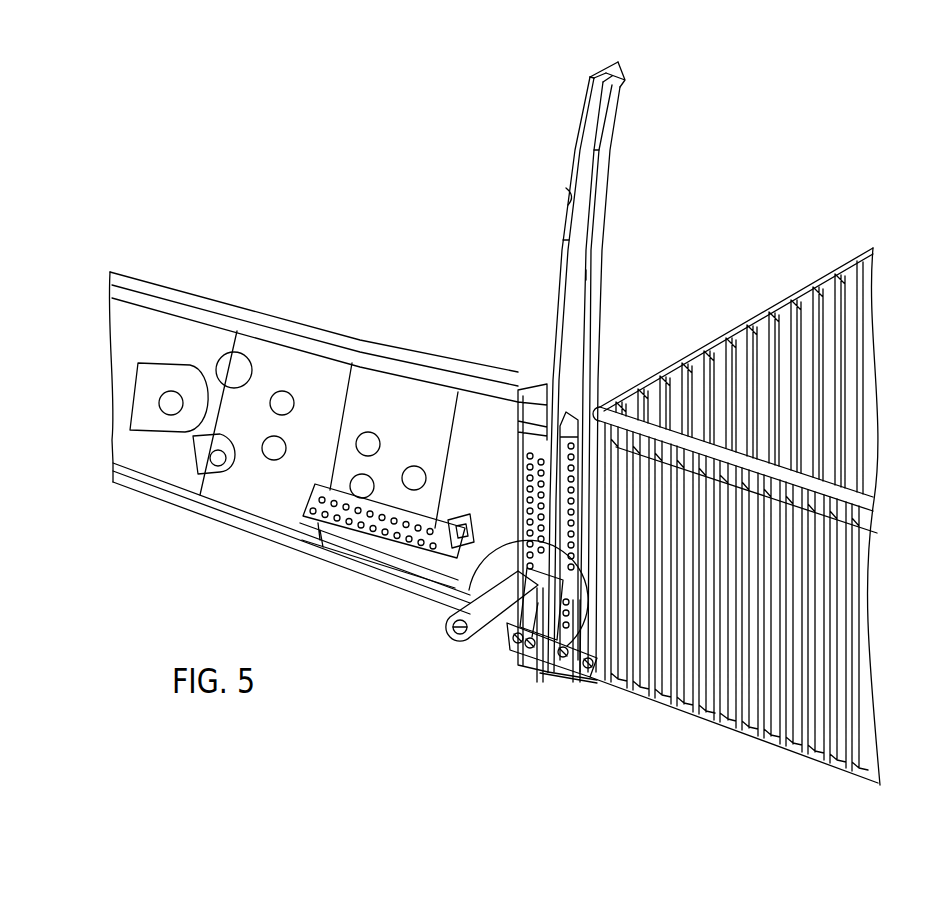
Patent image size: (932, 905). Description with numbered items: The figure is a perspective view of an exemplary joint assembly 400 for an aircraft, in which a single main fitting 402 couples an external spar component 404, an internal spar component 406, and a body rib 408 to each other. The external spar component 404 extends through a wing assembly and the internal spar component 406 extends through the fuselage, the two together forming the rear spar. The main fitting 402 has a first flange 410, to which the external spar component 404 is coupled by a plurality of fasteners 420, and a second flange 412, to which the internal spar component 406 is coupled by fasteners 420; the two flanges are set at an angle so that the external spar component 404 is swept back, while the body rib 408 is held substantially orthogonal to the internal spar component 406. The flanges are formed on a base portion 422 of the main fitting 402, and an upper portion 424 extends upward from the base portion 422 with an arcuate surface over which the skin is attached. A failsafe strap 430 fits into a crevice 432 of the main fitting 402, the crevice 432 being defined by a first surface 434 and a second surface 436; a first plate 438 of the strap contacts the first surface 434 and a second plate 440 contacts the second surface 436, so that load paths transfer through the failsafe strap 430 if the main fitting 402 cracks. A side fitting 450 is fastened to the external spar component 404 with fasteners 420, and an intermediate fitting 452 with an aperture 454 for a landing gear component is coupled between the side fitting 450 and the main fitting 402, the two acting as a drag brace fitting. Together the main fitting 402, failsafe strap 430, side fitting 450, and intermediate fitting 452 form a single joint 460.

The joint assembly 400 is at (767, 107).
The main fitting 402 is at (545, 387).
The external spar component 404 is at (272, 360).
The internal spar component 406 is at (733, 723).
The body rib 408 is at (817, 297).
The first flange 410 is at (518, 450).
The second flange 412 is at (553, 667).
The fasteners 420 is at (312, 512).
The base portion 422 is at (598, 675).
The upper portion 424 is at (608, 135).
The failsafe strap 430 is at (568, 208).
The crevice 432 is at (590, 143).
The first surface 434 is at (592, 72).
The second surface 436 is at (623, 70).
The first plate 438 is at (565, 240).
The second plate 440 is at (580, 273).
The side fitting 450 is at (400, 555).
The intermediate fitting 452 is at (520, 620).
The aperture 454 is at (440, 630).
The single joint 460 is at (530, 670).